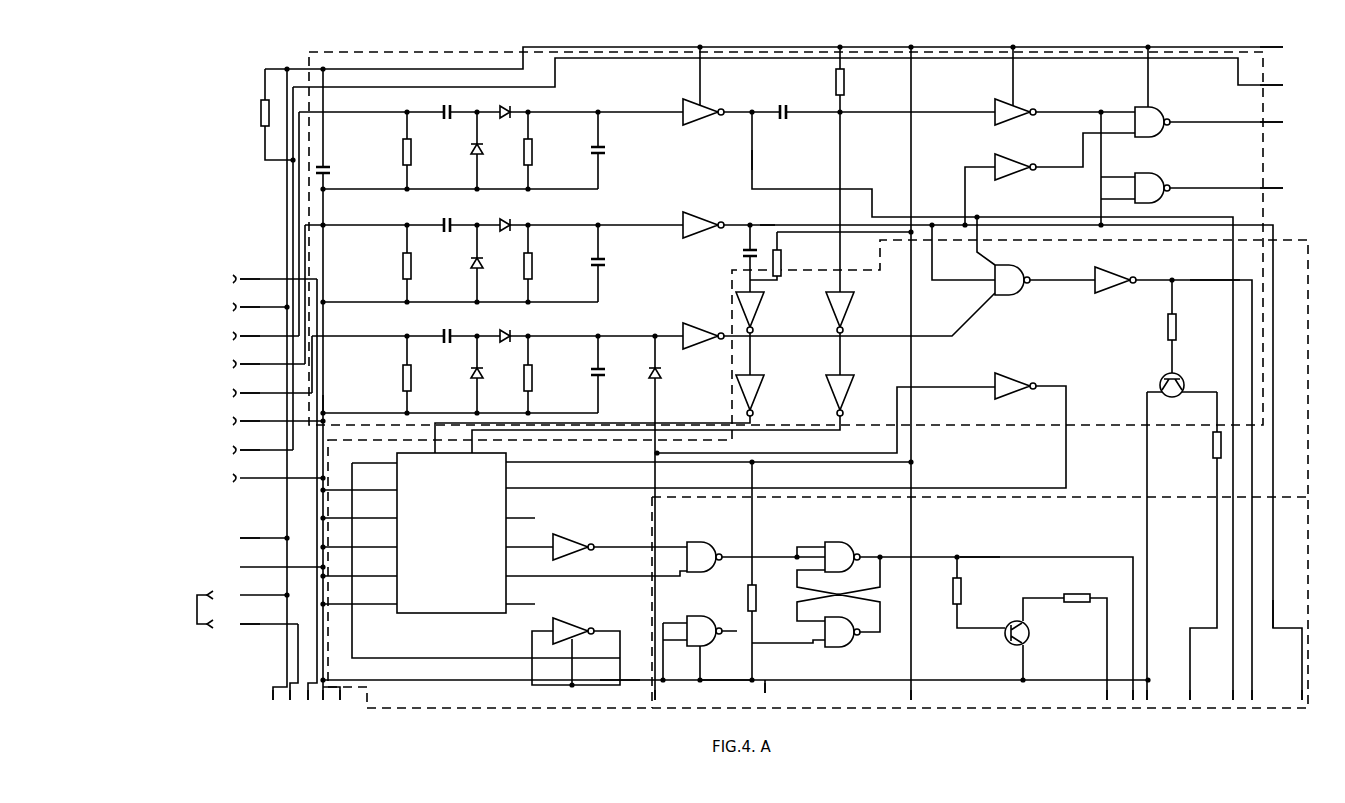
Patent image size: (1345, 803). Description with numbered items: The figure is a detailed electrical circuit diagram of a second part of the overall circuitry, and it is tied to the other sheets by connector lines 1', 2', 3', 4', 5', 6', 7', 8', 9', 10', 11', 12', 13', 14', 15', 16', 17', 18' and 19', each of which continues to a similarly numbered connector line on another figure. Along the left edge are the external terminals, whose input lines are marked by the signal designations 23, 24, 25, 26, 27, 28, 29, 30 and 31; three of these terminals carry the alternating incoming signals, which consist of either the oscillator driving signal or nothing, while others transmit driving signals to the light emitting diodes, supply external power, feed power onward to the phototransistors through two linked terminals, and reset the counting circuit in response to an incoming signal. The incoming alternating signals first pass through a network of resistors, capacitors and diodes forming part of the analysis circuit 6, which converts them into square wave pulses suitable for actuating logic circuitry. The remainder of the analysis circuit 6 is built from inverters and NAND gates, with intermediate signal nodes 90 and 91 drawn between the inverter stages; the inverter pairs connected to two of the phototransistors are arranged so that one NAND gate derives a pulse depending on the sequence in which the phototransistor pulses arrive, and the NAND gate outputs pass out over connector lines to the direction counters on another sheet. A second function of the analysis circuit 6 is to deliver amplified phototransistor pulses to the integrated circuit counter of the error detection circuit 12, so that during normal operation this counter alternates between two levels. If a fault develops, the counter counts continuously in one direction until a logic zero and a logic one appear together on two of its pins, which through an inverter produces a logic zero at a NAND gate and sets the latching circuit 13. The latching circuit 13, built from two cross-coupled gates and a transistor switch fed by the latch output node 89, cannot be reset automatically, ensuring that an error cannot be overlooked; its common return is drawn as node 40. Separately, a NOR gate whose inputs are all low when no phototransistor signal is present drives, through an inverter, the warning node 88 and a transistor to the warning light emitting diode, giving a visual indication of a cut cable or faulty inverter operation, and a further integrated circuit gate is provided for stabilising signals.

The connector line 1' is at (271, 704).
The connector line 2' is at (294, 704).
The connector line 3' is at (309, 704).
The connector line 4' is at (324, 704).
The connector line 5' is at (342, 704).
The connector line 6' is at (663, 692).
The connector line 7' is at (772, 691).
The connector line 8' is at (919, 692).
The connector line 9' is at (1099, 692).
The connector line 10' is at (1122, 692).
The connector line 11' is at (1159, 692).
The connector line 12' is at (1202, 692).
The connector line 13' is at (1243, 692).
The connector line 14' is at (1263, 692).
The connector line 15' is at (1292, 692).
The connector line 16' is at (1287, 188).
The connector line 17' is at (1287, 122).
The connector line 18' is at (1287, 85).
The connector line 19' is at (1287, 47).
The signal line 23 is at (245, 274).
The signal line 24 is at (557, 441).
The signal line 25 is at (245, 331).
The signal line 26 is at (245, 359).
The signal line 27 is at (245, 388).
The signal line 28 is at (655, 435).
The signal line 29 is at (245, 445).
The signal line 30 is at (246, 576).
The signal line 31 is at (258, 614).
The signal line 40 is at (725, 691).
The signal line 88 is at (1215, 270).
The signal line 89 is at (980, 546).
The signal line 90 is at (770, 154).
The signal line 91 is at (784, 215).
The analysis circuit 6 is at (332, 403).
The error detection circuit 12 is at (623, 671).
The latching circuit 13 is at (1285, 614).